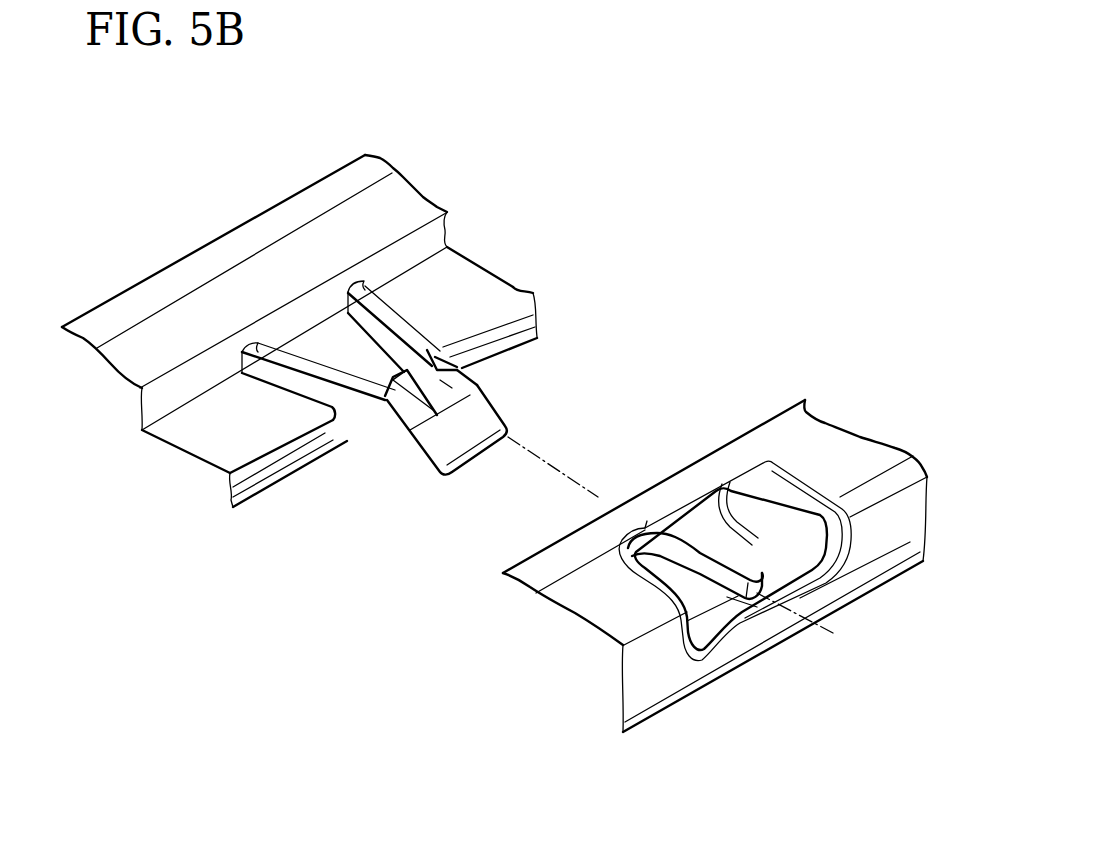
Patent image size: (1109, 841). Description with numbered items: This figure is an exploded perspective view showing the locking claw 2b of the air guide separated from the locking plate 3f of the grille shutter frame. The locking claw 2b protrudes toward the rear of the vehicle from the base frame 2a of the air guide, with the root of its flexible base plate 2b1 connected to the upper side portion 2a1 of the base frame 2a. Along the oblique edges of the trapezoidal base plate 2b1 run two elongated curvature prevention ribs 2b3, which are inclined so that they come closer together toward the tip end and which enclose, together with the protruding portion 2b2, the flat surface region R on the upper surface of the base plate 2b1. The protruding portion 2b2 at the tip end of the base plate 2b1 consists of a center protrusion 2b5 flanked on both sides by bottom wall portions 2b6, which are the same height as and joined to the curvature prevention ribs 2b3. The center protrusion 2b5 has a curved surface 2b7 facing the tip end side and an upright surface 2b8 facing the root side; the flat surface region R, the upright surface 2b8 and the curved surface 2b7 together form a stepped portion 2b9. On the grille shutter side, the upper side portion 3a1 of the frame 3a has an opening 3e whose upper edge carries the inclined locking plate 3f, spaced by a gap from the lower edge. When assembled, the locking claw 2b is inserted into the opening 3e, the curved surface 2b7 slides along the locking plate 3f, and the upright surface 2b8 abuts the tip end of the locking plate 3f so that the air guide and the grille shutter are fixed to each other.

The base frame 2a is at (233, 229).
The upper side portion of the base frame 2a1 is at (344, 220).
The flat surface region R is at (338, 342).
The locking claw 2b is at (472, 377).
The base plate 2b1 is at (397, 462).
The protruding portion 2b2 is at (384, 417).
The curvature prevention ribs 2b3 is at (377, 313).
The center protrusion 2b5 is at (446, 386).
The bottom wall portions 2b6 is at (477, 336).
The curved surface 2b7 is at (429, 373).
The upright surface 2b8 is at (403, 370).
The stepped portion 2b9 is at (382, 374).
The frame 3a is at (677, 480).
The upper side portion of the frame 3a1 is at (765, 441).
The opening 3e is at (774, 483).
The locking plate 3f is at (731, 562).